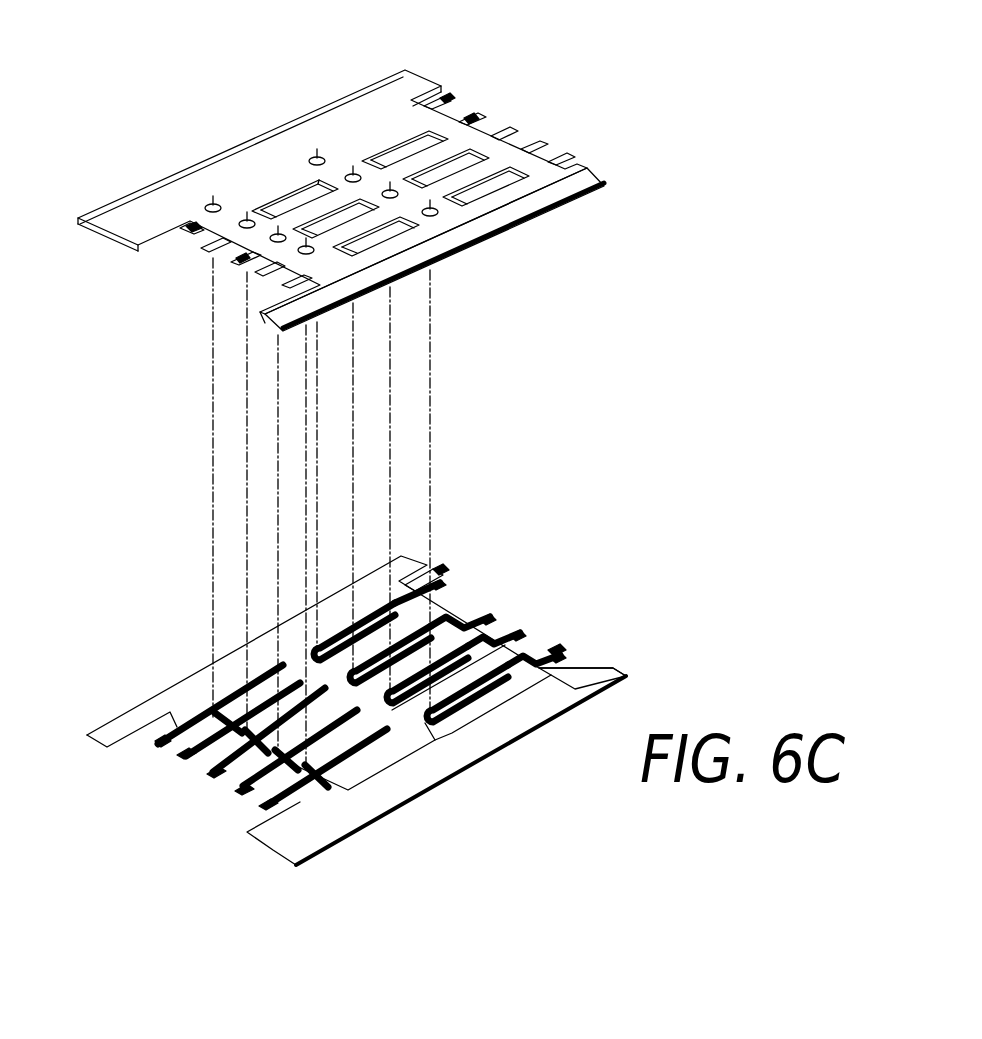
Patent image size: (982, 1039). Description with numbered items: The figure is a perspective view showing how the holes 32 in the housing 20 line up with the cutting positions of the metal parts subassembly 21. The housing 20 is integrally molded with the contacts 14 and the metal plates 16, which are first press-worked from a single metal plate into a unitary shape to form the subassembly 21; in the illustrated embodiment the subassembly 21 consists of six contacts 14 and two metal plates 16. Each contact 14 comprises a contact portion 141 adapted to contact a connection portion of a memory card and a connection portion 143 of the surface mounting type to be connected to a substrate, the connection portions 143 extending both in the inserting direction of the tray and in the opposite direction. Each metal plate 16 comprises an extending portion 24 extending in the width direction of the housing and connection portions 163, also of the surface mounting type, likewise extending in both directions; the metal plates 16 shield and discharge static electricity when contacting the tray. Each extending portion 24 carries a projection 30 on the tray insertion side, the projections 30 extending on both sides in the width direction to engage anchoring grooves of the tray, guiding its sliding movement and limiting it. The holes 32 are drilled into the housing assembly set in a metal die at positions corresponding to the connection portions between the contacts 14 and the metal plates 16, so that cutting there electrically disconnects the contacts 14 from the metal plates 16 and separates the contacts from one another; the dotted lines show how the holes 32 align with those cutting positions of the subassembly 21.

The housing 20 is at (262, 88).
The subassembly 21 is at (333, 580).
The contact 14 is at (490, 118).
The contact portion 141 is at (387, 600).
The connection portion 143 is at (478, 121).
The metal plate 16 is at (453, 99).
The connection portion 163 is at (450, 104).
The extending portion 24 is at (190, 172).
The projection 30 is at (95, 214).
The hole 32 is at (321, 157).